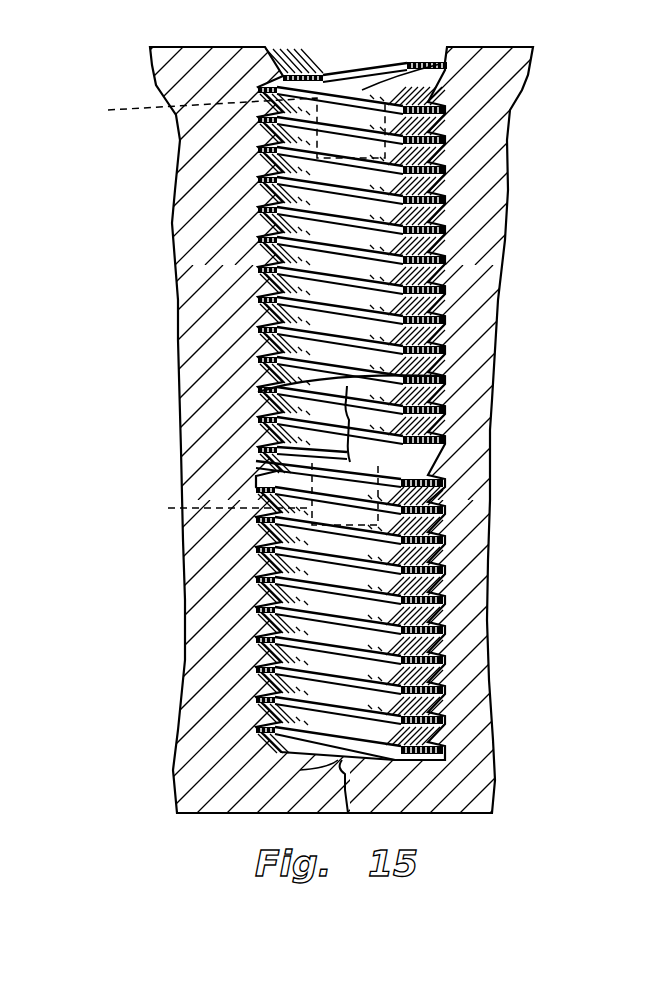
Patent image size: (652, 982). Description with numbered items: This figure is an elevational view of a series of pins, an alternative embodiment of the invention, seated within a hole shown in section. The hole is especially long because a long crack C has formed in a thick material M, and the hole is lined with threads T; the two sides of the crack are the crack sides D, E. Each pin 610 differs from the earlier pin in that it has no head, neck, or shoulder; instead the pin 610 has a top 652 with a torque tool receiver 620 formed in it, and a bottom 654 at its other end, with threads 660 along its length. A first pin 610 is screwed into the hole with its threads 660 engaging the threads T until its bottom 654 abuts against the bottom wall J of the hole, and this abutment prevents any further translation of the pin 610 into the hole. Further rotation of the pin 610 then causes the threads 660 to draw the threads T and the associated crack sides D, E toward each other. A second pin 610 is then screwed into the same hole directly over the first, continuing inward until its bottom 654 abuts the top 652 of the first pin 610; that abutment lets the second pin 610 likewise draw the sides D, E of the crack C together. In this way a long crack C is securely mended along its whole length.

The pin 610 is at (243, 239).
The torque tool receiver 620 is at (221, 311).
The top 652 is at (448, 84).
The bottom 654 is at (270, 385).
The threads 660 is at (437, 113).
The crack C is at (380, 418).
The bottom wall J is at (433, 748).
The threads T is at (300, 437).
The material M is at (228, 164).
The crack side D is at (220, 586).
The crack side E is at (470, 549).